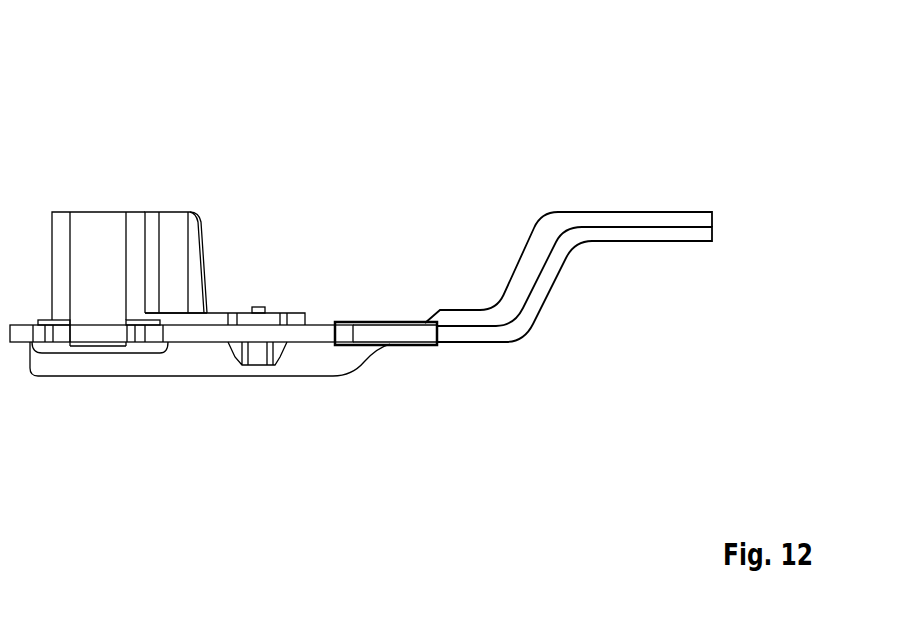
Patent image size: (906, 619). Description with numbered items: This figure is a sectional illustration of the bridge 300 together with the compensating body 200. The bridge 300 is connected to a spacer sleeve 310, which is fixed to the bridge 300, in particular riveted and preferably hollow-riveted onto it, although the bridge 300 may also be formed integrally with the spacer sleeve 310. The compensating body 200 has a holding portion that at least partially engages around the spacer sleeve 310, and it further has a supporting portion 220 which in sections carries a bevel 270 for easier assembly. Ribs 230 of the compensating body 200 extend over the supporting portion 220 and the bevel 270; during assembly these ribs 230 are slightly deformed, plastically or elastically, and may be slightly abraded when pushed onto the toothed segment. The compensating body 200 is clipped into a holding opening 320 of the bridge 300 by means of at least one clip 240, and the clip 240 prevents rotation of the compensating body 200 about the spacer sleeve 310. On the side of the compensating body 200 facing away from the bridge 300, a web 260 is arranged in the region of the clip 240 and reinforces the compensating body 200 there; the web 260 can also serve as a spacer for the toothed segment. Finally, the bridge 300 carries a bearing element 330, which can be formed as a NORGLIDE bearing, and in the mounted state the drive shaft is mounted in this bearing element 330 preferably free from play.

The compensating body 200 is at (200, 241).
The supporting portion 220 is at (167, 247).
The ribs 230 is at (208, 272).
The clip 240 is at (266, 352).
The web 260 is at (258, 307).
The bevel 270 is at (207, 240).
The bridge 300 is at (527, 272).
The spacer sleeve 310 is at (88, 262).
The holding opening 320 is at (230, 332).
The bearing element 330 is at (427, 333).